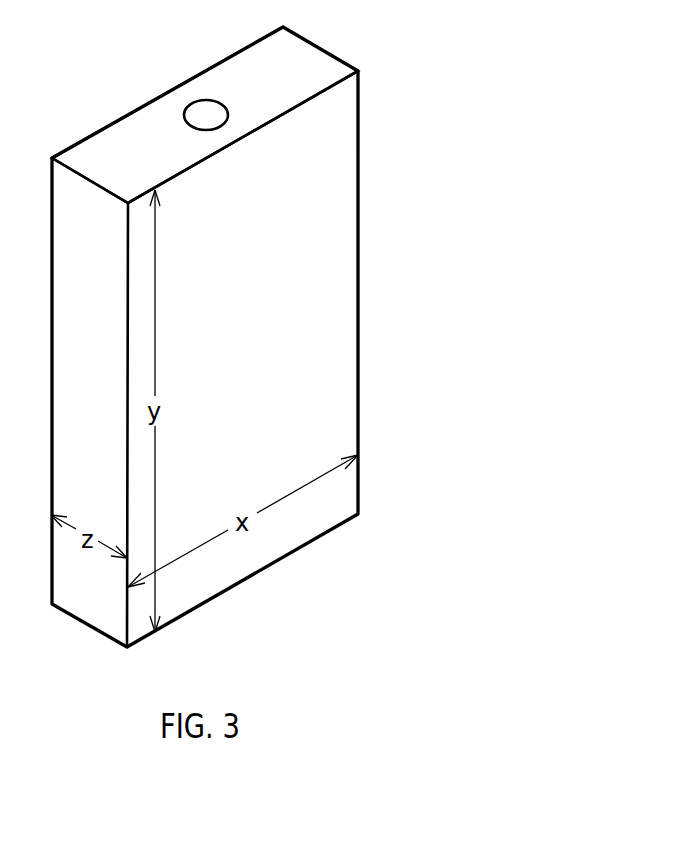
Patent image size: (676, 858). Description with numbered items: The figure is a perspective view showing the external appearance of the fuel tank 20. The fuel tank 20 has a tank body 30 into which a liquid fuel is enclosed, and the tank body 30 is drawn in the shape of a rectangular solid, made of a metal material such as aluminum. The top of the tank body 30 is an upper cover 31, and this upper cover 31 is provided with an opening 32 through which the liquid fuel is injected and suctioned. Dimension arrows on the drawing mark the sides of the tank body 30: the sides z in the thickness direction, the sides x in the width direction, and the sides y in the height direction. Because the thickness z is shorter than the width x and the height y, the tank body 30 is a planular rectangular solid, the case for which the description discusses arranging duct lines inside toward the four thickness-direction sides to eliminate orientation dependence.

The fuel tank 20 is at (473, 142).
The tank body 30 is at (350, 292).
The upper cover 31 is at (300, 50).
The opening 32 is at (197, 112).